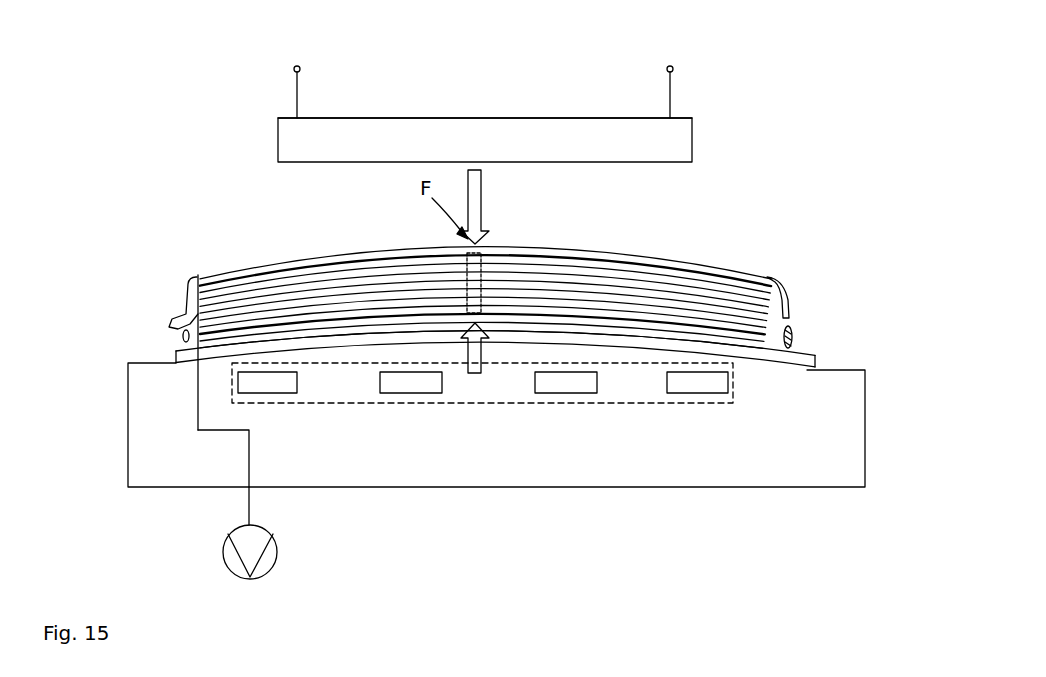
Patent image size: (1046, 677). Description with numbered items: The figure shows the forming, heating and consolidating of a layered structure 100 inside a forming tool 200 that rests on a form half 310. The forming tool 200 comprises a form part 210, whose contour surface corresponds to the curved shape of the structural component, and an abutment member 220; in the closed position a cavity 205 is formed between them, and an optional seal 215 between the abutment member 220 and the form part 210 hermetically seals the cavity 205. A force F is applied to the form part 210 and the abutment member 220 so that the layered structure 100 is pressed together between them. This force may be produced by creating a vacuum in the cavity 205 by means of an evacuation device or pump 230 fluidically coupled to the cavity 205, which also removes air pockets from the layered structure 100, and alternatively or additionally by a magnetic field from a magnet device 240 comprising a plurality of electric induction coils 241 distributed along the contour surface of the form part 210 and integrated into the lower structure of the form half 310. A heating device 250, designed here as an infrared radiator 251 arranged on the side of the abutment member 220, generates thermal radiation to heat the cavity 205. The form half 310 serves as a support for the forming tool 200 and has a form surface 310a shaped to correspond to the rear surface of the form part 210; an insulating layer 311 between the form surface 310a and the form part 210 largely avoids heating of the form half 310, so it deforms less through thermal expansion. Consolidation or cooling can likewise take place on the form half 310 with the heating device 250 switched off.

The layered structure 100 is at (773, 323).
The forming tool 200 is at (485, 297).
The cavity 205 is at (774, 337).
The form part 210 is at (772, 352).
The seal 215 is at (170, 324).
The abutment member 220 is at (727, 268).
The evacuation device or pump 230 is at (250, 590).
The magnet device 240 is at (635, 403).
The electric induction coils 241 is at (283, 393).
The heating device 250 is at (386, 120).
The infrared radiator 251 is at (443, 118).
The form half 310 is at (768, 487).
The form surface 310a is at (240, 352).
The insulating layer 311 is at (808, 368).